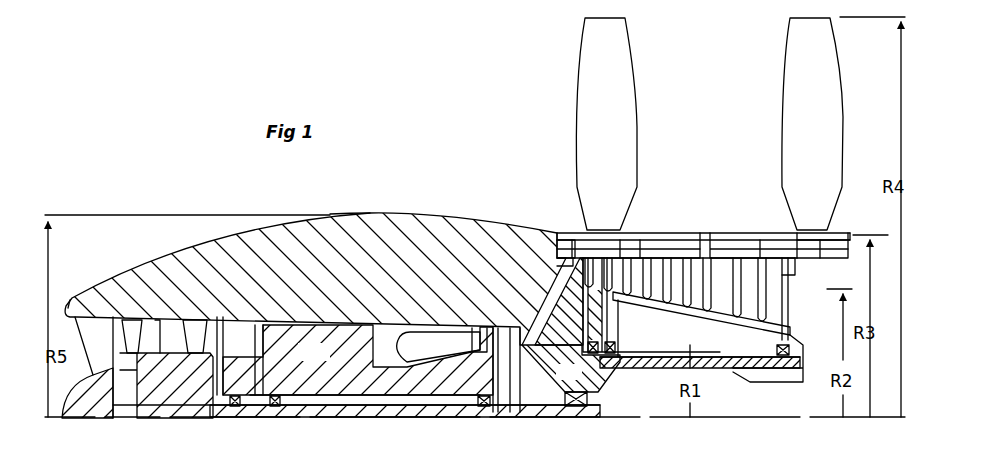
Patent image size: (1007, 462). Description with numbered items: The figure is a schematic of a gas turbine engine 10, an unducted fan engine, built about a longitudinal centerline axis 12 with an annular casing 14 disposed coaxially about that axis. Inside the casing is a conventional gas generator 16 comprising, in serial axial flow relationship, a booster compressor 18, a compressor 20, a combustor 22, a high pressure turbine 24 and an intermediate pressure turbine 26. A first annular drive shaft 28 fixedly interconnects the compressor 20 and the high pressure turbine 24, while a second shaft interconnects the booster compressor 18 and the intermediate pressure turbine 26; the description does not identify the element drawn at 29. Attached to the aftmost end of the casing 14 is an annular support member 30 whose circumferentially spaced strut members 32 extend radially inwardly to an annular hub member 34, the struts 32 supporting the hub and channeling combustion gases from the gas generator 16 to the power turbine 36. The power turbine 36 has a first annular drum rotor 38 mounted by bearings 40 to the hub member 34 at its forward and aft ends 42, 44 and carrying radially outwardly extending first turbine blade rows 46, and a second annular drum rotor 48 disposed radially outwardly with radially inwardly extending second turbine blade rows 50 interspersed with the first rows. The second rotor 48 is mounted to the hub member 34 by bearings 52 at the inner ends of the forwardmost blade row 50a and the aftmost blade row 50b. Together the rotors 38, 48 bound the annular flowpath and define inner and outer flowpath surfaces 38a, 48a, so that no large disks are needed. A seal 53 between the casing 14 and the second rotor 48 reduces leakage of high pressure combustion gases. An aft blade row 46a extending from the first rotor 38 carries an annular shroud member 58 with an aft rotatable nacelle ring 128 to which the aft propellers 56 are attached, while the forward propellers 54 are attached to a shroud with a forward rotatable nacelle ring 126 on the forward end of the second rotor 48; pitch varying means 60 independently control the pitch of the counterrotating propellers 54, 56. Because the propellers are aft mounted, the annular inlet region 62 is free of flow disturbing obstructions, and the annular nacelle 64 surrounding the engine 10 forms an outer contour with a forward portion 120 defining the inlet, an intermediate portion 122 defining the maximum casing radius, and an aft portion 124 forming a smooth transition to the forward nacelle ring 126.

The gas turbine engine 10 is at (263, 196).
The longitudinal centerline axis 12 is at (238, 420).
The annular casing 14 is at (288, 316).
The gas generator 16 is at (318, 310).
The booster compressor 18 is at (165, 323).
The compressor 20 is at (357, 357).
The combustor 22 is at (438, 347).
The high pressure turbine 24 is at (490, 323).
The intermediate pressure turbine 26 is at (512, 327).
The first annular drive shaft 28 is at (388, 392).
The inner tube 29 is at (300, 420).
The annular support member 30 is at (569, 325).
The strut members 32 is at (557, 281).
The annular hub member 34 is at (760, 368).
The power turbine 36 is at (702, 196).
The first annular drum rotor 38 is at (676, 320).
The inner flowpath surface 38a is at (700, 328).
The bearings 40 is at (615, 368).
The forward end 42 is at (620, 320).
The aft end 44 is at (738, 368).
The first turbine blade rows 46 is at (728, 231).
The aft blade row 46a is at (800, 275).
The second annular drum rotor 48 is at (758, 238).
The outer flowpath surface 48a is at (641, 247).
The second turbine blade rows 50 is at (683, 230).
The forwardmost blade row 50a is at (590, 337).
The aftmost blade row 50b is at (790, 307).
The bearings 52 is at (587, 347).
The seal 53 is at (550, 256).
The forward propellers 54 is at (606, 124).
The aft propellers 56 is at (812, 124).
The annular shroud member 58 is at (811, 240).
The pitch varying means 60 is at (556, 243).
The annular inlet region 62 is at (106, 338).
The annular nacelle 64 is at (168, 252).
The forward portion 120 is at (68, 300).
The intermediate portion 122 is at (378, 213).
The aft portion 124 is at (535, 224).
The forward rotatable nacelle ring 126 is at (580, 232).
The aft rotatable nacelle ring 128 is at (838, 230).